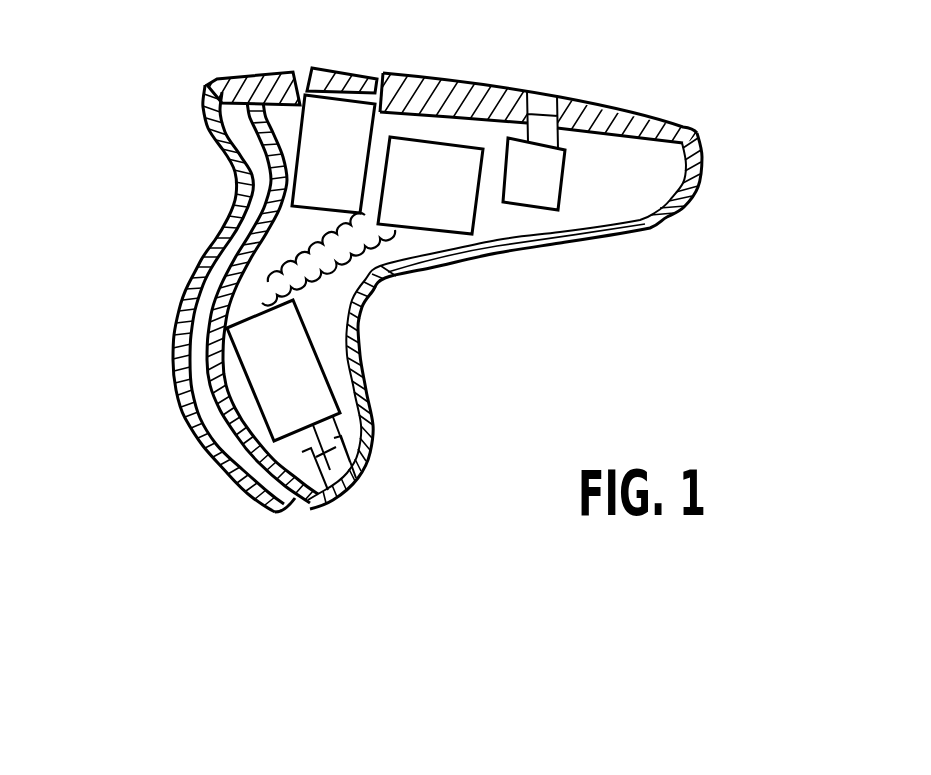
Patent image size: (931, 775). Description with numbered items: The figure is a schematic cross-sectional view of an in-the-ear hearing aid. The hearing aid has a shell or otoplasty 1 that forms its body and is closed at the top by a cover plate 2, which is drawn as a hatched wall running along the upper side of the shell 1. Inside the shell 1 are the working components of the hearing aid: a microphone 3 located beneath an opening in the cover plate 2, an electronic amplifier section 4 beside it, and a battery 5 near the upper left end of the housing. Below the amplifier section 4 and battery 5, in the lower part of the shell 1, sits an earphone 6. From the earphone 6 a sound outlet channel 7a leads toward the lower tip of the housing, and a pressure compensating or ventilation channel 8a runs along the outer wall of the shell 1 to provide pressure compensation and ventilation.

The shell or otoplasty 1 is at (648, 229).
The cover plate 2 is at (465, 80).
The microphone 3 is at (547, 195).
The electronic amplifier section 4 is at (430, 203).
The battery 5 is at (318, 168).
The earphone 6 is at (297, 362).
The sound outlet channel 7a is at (340, 483).
The pressure compensating or ventilation channel 8a is at (197, 377).